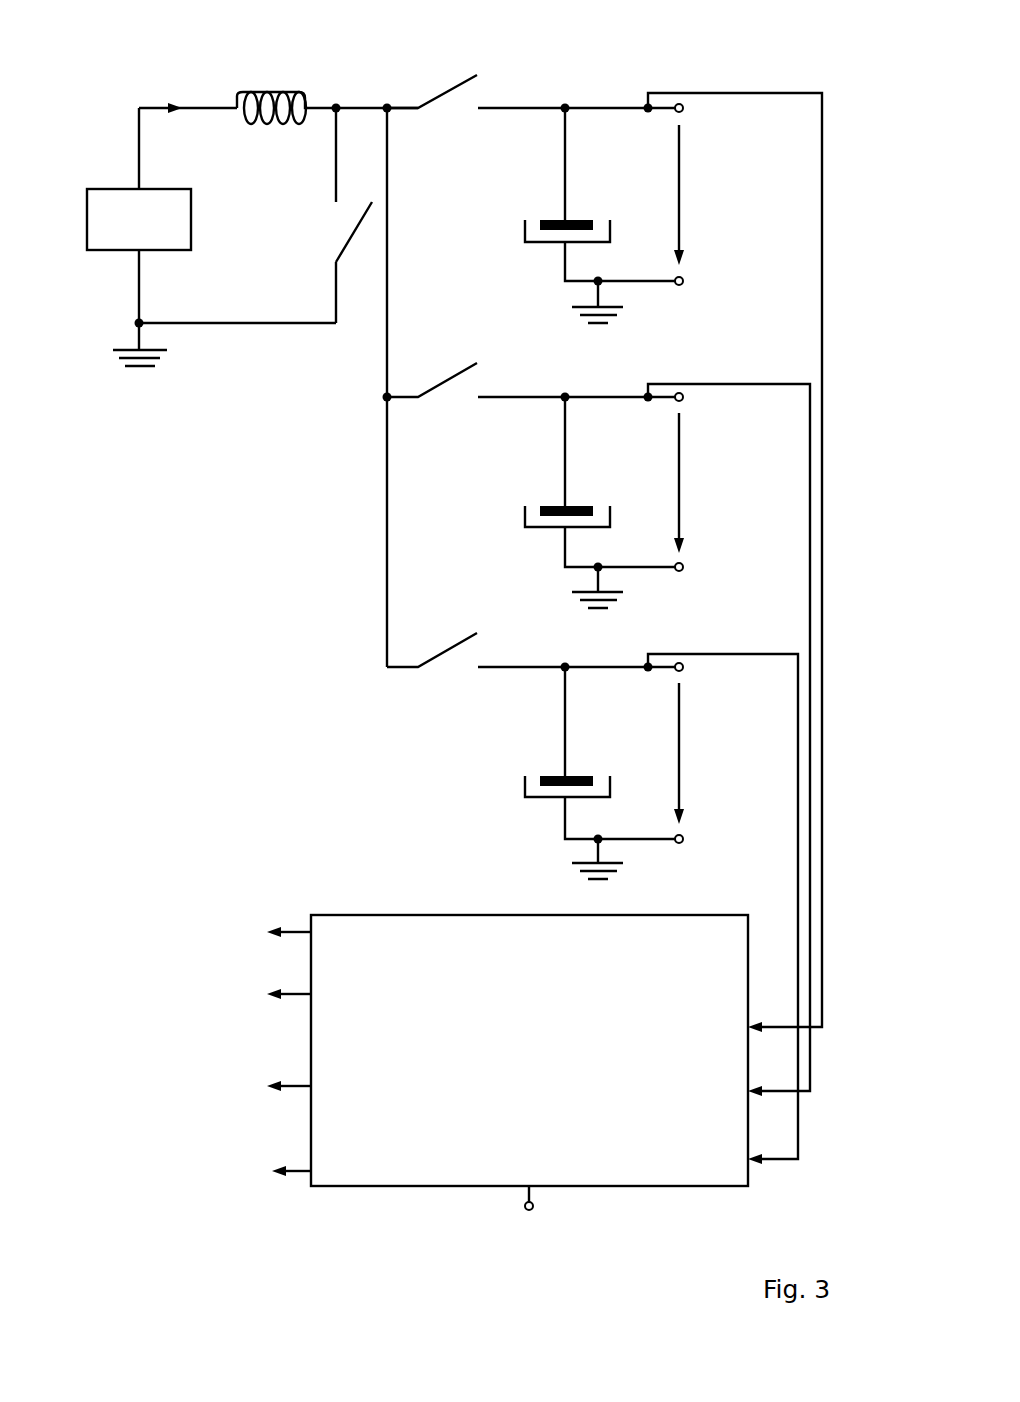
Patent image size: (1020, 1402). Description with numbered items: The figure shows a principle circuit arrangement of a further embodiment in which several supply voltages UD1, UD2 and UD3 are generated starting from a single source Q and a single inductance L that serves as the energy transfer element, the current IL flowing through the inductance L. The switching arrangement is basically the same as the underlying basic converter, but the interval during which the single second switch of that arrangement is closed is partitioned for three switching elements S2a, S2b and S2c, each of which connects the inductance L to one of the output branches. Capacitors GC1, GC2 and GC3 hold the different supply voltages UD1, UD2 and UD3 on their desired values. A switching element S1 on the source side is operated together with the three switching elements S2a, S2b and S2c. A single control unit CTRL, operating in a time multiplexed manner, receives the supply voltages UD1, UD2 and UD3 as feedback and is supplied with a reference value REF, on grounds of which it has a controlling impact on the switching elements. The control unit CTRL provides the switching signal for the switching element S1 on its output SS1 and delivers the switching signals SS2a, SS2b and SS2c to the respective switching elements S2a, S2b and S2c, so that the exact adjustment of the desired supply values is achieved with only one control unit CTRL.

The source Q is at (211, 237).
The current IL is at (177, 76).
The inductance L is at (327, 81).
The switching element S1 is at (292, 215).
The switching element S2a is at (476, 136).
The switching element S2b is at (476, 424).
The switching element S2c is at (476, 694).
The capacitor GC1 is at (555, 214).
The capacitor GC2 is at (555, 501).
The capacitor GC3 is at (555, 771).
The supply voltage UD1 is at (735, 562).
The supply voltage UD2 is at (729, 740).
The supply voltage UD3 is at (723, 909).
The control unit CTRL is at (529, 1050).
The output SS1 is at (209, 931).
The switching signal SS2a is at (189, 996).
The switching signal SS2b is at (189, 1084).
The switching signal SS2c is at (189, 1172).
The reference value REF is at (529, 1241).